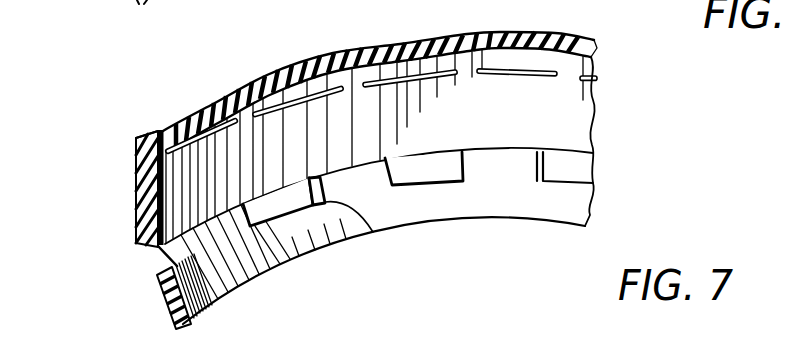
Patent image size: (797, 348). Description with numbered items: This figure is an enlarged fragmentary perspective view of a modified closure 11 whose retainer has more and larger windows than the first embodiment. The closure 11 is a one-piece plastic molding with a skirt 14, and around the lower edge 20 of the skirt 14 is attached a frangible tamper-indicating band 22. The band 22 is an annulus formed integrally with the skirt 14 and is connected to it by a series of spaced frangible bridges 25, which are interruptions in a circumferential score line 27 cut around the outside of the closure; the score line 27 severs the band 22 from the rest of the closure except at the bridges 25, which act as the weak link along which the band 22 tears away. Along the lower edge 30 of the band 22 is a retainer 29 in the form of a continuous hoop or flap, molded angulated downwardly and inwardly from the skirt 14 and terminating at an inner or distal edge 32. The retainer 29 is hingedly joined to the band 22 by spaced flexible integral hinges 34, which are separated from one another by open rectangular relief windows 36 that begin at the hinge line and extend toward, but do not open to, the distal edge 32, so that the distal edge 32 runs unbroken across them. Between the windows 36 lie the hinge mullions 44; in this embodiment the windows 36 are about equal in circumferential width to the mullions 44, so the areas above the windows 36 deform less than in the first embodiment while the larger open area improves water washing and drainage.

The closure 11 is at (650, 93).
The skirt 14 is at (150, 128).
The lower edge 20 is at (135, 144).
The tamper-indicating band 22 is at (104, 235).
The frangible bridges 25 is at (352, 143).
The score line 27 is at (497, 67).
The retainer 29 is at (167, 303).
The lower edge 30 is at (138, 173).
The distal edge 32 is at (343, 243).
The hinges 34 is at (543, 155).
The windows 36 is at (397, 240).
The mullions 44 is at (497, 167).